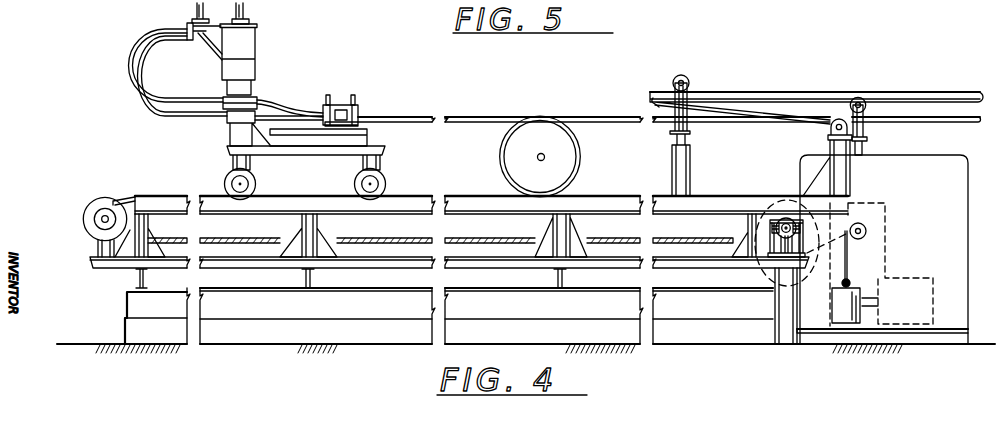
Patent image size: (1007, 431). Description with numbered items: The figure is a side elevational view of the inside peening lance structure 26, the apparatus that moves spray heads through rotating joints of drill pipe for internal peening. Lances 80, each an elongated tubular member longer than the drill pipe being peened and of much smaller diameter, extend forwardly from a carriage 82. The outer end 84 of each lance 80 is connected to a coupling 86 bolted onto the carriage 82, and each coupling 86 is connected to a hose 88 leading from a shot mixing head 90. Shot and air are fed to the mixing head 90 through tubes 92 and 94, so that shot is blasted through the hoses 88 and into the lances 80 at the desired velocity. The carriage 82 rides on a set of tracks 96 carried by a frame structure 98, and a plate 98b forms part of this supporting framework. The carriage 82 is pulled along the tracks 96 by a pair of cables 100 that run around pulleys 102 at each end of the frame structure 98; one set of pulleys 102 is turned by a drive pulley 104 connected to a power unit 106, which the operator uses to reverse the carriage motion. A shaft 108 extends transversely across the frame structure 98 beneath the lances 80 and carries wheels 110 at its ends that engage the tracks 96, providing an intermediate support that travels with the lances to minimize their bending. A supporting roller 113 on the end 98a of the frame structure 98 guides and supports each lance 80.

The inside peening lance structure 26 is at (120, 62).
The lance 80 is at (404, 117).
The carriage 82 is at (293, 152).
The outer end of lance 84 is at (365, 110).
The coupling 86 is at (338, 97).
The hose 88 is at (278, 101).
The shot mixing head 90 is at (247, 68).
The tube 92 is at (196, 9).
The tube 94 is at (246, 10).
The tracks 96 is at (408, 196).
The frame structure 98 is at (401, 315).
The end of frame 98a is at (869, 143).
The support plate 98b is at (109, 264).
The cable 100 is at (121, 197).
The pulley 102 is at (95, 204).
The drive pulley 104 is at (765, 200).
The power unit 106 is at (940, 212).
The shaft 108 is at (548, 136).
The wheel 110 is at (568, 165).
The supporting roller 113 is at (838, 119).